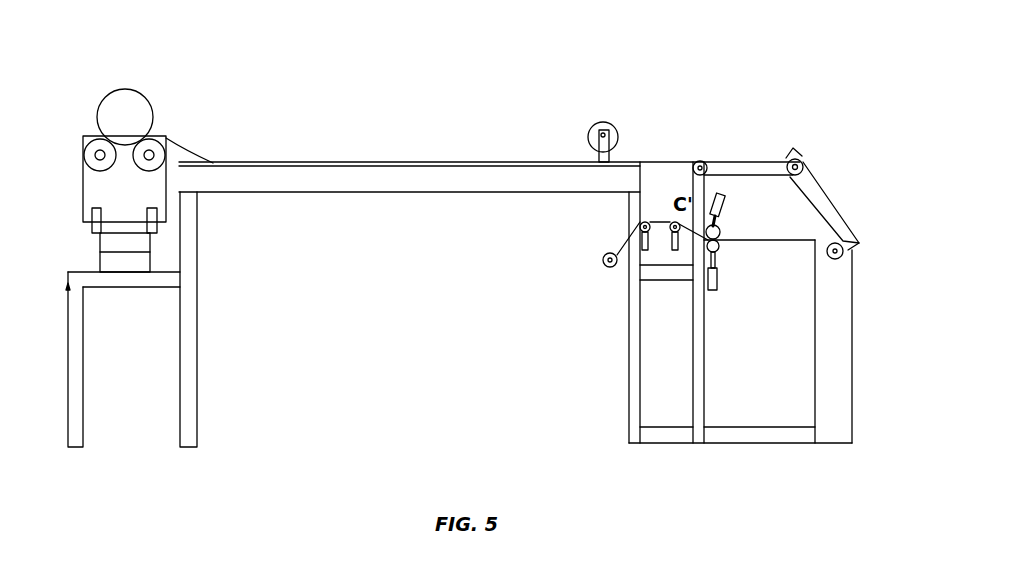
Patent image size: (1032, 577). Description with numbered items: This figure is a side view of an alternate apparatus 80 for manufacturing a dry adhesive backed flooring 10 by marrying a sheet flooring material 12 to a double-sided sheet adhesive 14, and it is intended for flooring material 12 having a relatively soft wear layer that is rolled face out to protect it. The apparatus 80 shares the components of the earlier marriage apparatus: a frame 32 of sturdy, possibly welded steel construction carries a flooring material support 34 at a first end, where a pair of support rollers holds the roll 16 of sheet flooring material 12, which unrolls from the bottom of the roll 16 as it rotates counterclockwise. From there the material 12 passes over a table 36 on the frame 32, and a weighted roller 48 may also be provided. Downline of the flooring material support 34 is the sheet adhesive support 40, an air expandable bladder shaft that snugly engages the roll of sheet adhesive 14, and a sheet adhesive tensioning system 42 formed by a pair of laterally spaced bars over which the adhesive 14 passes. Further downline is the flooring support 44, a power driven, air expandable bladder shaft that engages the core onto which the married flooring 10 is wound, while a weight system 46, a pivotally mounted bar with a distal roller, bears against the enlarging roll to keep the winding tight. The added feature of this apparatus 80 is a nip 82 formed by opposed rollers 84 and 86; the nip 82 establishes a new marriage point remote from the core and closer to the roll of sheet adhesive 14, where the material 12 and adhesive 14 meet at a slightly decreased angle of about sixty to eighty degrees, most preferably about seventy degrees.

The dry adhesive backed flooring 10 is at (845, 258).
The sheet flooring material 12 is at (122, 90).
The double-sided sheet adhesive 14 is at (620, 254).
The roll 16 is at (115, 127).
The frame 32 is at (197, 368).
The flooring material support 34 is at (72, 176).
The table 36 is at (364, 190).
The sheet adhesive support 40 is at (595, 252).
The sheet adhesive tensioning system 42 is at (657, 216).
The flooring support 44 is at (835, 262).
The weight system 46 is at (850, 208).
The weighted roller 48 is at (613, 129).
The apparatus 80 is at (458, 132).
The nip 82 is at (719, 234).
The roller 84 is at (719, 251).
The roller 86 is at (723, 222).